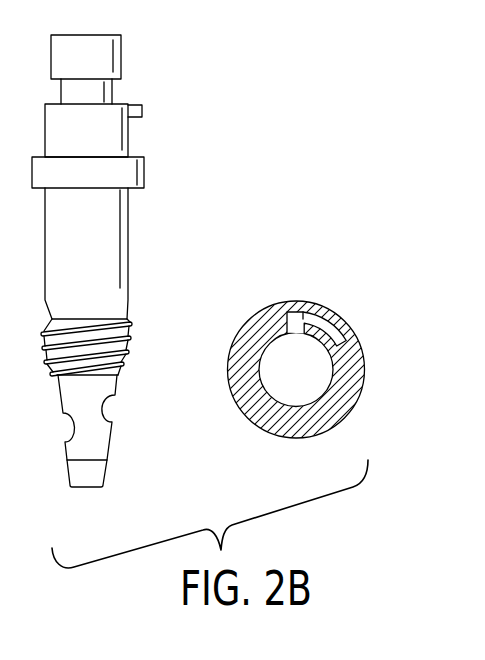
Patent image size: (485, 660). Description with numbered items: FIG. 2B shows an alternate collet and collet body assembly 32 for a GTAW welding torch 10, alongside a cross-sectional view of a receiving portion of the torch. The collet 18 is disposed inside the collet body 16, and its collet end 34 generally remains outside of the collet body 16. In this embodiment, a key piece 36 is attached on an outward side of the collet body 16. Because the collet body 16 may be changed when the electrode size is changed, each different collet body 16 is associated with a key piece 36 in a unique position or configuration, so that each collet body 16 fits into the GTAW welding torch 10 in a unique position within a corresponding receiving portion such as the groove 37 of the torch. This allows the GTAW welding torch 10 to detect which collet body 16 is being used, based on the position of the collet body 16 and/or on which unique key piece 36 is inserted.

The GTAW welding torch 10 is at (287, 333).
The collet body 16 is at (128, 242).
The collet 18 is at (112, 90).
The collet and collet body assembly 32 is at (152, 258).
The collet end 34 is at (121, 55).
The key piece 36 is at (142, 110).
The groove 37 is at (304, 306).